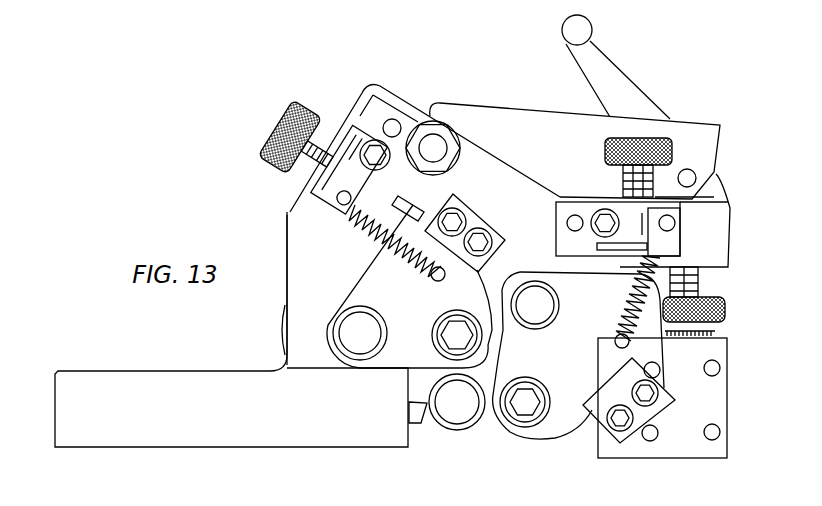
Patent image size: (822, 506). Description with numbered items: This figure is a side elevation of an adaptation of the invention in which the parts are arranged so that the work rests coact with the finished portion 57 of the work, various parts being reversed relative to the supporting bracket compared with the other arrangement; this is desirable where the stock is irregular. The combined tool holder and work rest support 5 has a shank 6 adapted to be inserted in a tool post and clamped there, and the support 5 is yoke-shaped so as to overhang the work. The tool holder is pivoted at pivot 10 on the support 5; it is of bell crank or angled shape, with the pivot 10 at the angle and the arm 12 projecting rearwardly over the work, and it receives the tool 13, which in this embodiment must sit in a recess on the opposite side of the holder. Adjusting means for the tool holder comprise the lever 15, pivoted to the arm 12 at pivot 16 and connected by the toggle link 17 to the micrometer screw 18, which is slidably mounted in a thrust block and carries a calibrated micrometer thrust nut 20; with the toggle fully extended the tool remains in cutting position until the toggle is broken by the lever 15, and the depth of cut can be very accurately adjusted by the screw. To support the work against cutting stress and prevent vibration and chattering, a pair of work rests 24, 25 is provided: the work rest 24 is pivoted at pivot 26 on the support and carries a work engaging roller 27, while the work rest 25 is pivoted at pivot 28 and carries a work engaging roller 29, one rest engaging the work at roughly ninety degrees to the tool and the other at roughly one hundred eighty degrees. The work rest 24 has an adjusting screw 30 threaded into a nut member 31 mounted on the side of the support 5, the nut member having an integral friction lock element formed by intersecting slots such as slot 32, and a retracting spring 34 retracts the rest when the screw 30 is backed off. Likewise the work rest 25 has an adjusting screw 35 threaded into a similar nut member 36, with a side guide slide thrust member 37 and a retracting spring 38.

The combined tool holder and work rest support 5 is at (303, 238).
The shank 6 is at (142, 390).
The pivot 10 is at (438, 143).
The arm 12 is at (690, 133).
The tool 13 is at (418, 424).
The lever 15 is at (642, 97).
The pivot 16 is at (694, 173).
The toggle link 17 is at (717, 192).
The micrometer screw 18 is at (700, 282).
The micrometer thrust nut 20 is at (723, 315).
The work rest 24 is at (395, 358).
The work rest 25 is at (572, 425).
The pivot 26 is at (355, 348).
The work engaging roller 27 is at (490, 348).
The pivot 28 is at (550, 308).
The work engaging roller 29 is at (518, 440).
The adjusting screw 30 is at (322, 135).
The nut member 31 is at (377, 110).
The slot 32 is at (323, 190).
The retracting spring 34 is at (395, 263).
The adjusting screw 35 is at (625, 180).
The nut member 36 is at (562, 212).
The side guide slide thrust member 37 is at (503, 241).
The retracting spring 38 is at (670, 240).
The finished portion of the work 57 is at (462, 435).